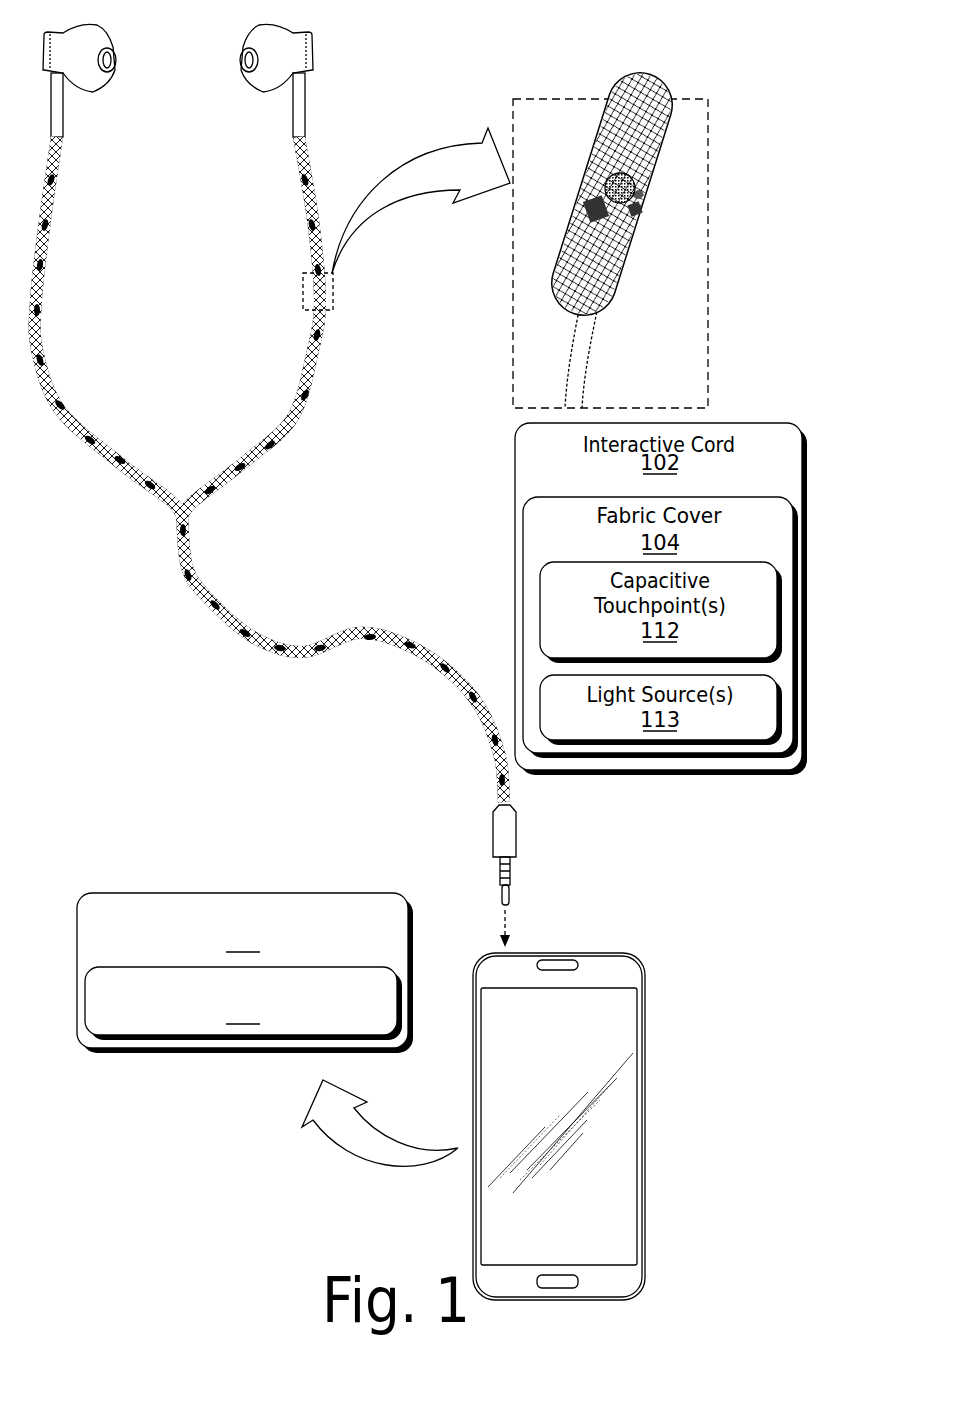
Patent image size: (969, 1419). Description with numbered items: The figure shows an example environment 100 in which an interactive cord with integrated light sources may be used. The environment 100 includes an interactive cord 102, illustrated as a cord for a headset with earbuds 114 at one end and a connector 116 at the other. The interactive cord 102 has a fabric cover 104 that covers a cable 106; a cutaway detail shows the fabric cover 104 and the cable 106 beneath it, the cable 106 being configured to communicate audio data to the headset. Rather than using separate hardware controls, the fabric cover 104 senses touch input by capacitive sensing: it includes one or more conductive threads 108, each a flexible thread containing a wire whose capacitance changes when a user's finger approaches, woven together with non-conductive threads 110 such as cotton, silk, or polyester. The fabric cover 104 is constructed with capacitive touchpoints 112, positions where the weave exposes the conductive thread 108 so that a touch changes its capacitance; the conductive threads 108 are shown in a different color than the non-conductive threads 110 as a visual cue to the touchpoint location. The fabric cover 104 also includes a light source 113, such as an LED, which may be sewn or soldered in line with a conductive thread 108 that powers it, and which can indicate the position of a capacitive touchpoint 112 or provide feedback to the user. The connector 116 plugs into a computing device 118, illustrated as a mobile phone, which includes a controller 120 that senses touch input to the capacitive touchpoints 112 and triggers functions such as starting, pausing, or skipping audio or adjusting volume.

The environment 100 is at (721, 70).
The interactive cord 102 is at (272, 572).
The fabric cover 104 is at (643, 100).
The cable 106 is at (580, 377).
The conductive thread 108 is at (640, 197).
The non-conductive thread 110 is at (622, 267).
The capacitive touchpoint 112 is at (597, 205).
The light source 113 is at (628, 183).
The earbuds 114 is at (95, 93).
The connector 116 is at (517, 870).
The computing device 118 is at (245, 973).
The controller 120 is at (243, 1003).